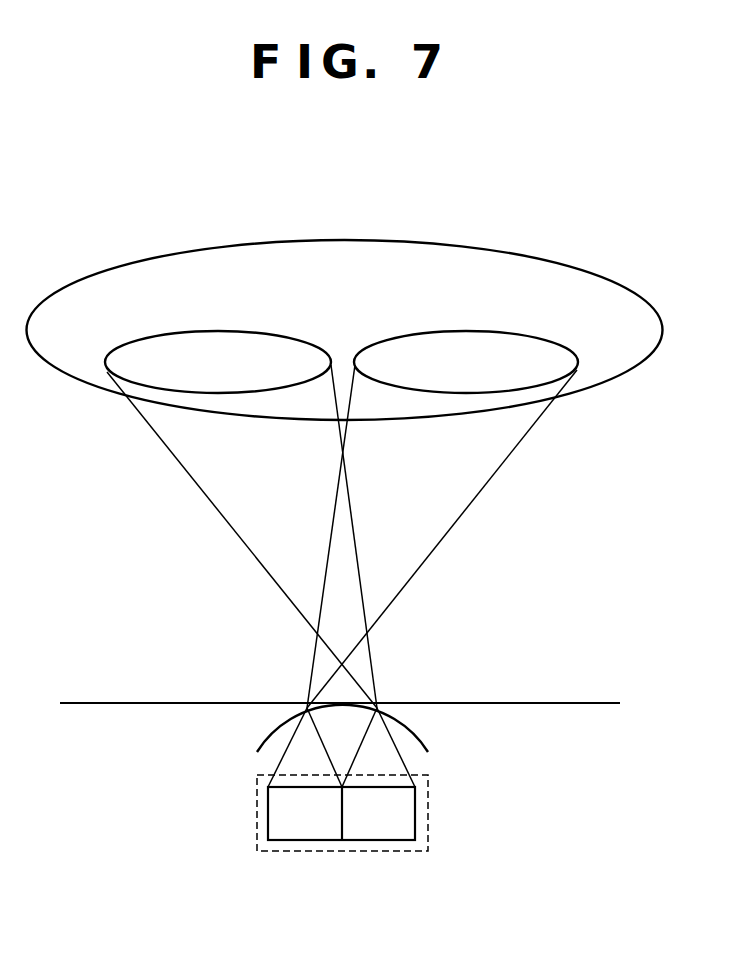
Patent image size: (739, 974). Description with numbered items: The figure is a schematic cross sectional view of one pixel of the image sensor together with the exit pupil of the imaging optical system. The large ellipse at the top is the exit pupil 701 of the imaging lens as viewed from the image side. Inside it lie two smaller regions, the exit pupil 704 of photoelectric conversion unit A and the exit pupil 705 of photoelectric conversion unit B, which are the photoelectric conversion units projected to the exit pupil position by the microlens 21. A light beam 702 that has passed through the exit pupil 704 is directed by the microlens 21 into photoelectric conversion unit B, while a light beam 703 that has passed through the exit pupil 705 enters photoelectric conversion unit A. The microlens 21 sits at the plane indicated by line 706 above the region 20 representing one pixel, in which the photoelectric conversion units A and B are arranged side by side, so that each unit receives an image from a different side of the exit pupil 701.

The exit pupil 701 is at (586, 248).
The light beam 702 is at (248, 534).
The light beam 703 is at (434, 534).
The exit pupil of photoelectric conversion unit A 704 is at (272, 315).
The exit pupil of photoelectric conversion unit B 705 is at (532, 315).
The image sensing plane 706 is at (99, 702).
The microlens 21 is at (406, 723).
The pixel region 20 is at (428, 793).